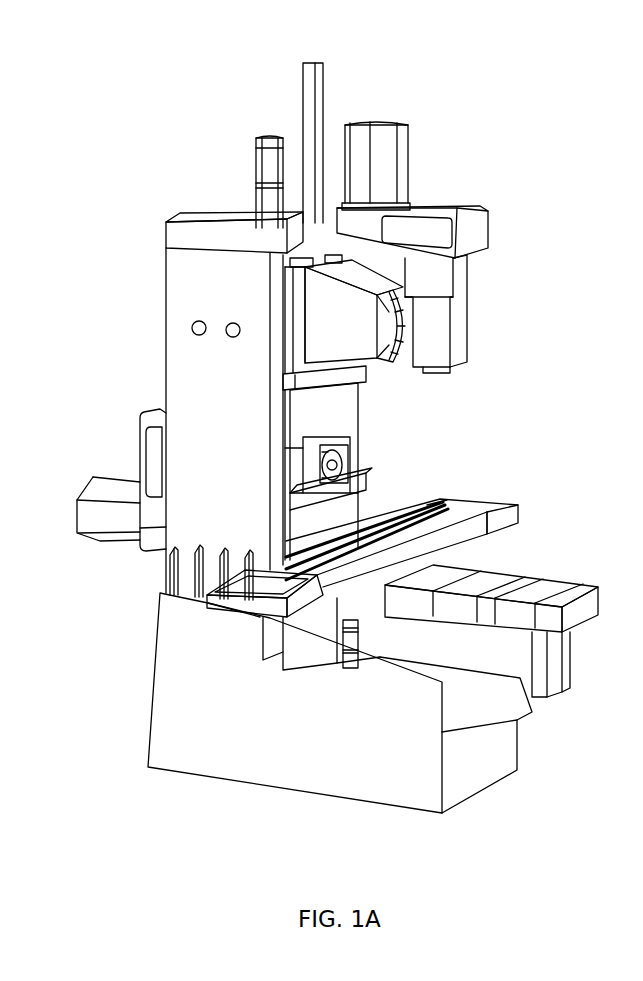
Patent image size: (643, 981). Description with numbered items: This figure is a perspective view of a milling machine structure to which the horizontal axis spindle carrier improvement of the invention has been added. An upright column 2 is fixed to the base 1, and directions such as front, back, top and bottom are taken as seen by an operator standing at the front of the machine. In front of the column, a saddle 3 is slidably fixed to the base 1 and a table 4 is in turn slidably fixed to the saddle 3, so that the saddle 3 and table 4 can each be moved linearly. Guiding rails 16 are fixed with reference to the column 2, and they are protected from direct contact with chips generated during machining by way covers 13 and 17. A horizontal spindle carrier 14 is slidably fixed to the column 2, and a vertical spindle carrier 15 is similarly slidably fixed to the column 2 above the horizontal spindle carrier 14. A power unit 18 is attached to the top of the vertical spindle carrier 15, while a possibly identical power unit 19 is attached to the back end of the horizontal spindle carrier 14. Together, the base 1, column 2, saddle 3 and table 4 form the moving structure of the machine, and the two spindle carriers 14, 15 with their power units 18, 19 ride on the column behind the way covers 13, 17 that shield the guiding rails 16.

The base 1 is at (515, 755).
The column 2 is at (165, 272).
The saddle 3 is at (466, 557).
The table 4 is at (525, 518).
The way cover 13 is at (365, 504).
The horizontal spindle carrier 14 is at (357, 462).
The vertical spindle carrier 15 is at (468, 338).
The guiding rails 16 is at (334, 254).
The way cover 17 is at (363, 406).
The power unit 18 is at (489, 232).
The power unit 19 is at (143, 413).